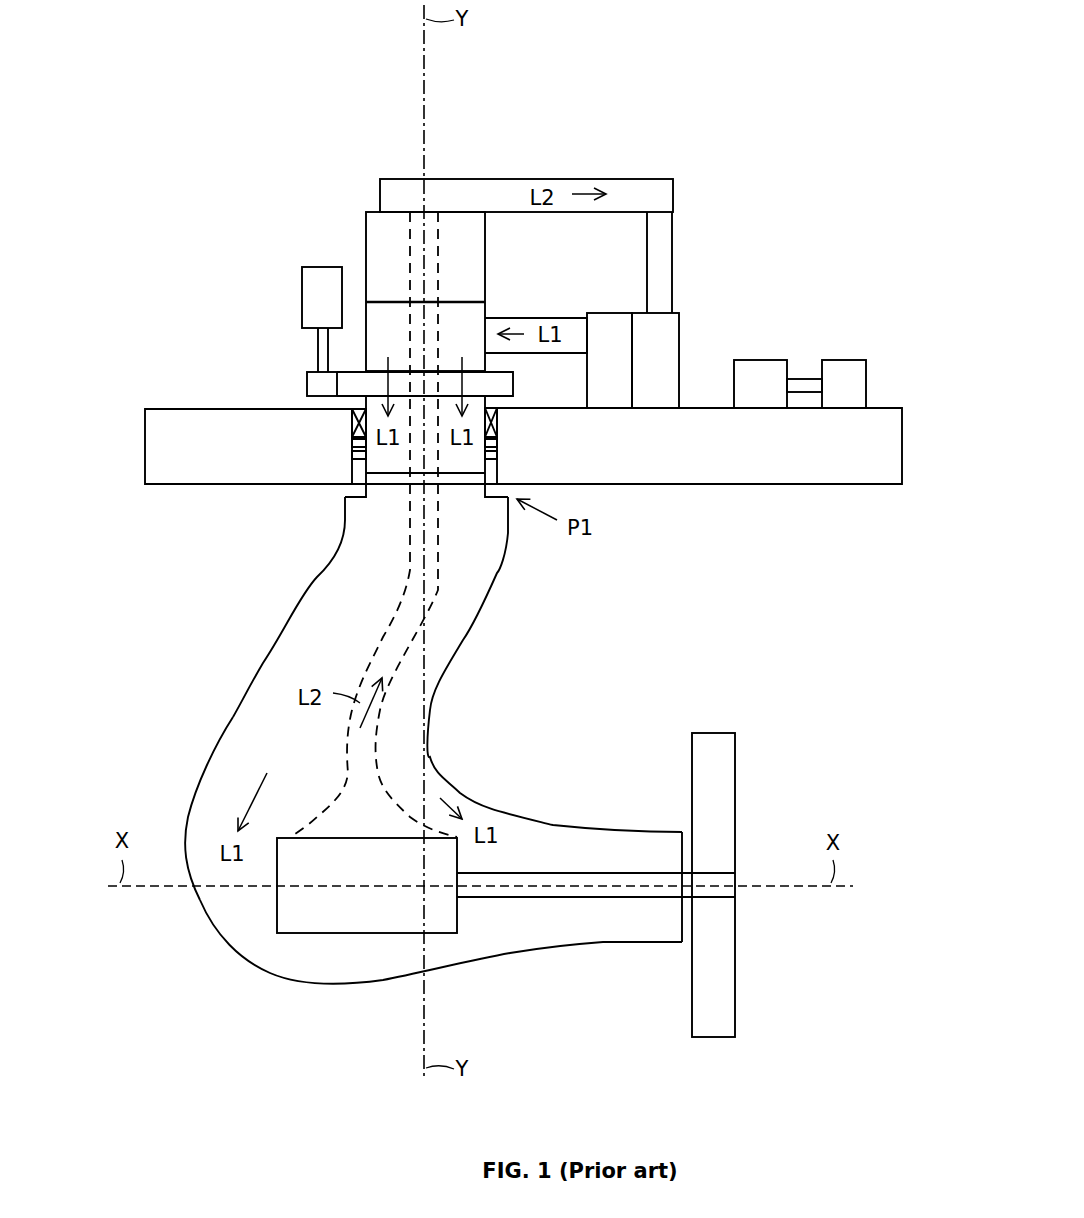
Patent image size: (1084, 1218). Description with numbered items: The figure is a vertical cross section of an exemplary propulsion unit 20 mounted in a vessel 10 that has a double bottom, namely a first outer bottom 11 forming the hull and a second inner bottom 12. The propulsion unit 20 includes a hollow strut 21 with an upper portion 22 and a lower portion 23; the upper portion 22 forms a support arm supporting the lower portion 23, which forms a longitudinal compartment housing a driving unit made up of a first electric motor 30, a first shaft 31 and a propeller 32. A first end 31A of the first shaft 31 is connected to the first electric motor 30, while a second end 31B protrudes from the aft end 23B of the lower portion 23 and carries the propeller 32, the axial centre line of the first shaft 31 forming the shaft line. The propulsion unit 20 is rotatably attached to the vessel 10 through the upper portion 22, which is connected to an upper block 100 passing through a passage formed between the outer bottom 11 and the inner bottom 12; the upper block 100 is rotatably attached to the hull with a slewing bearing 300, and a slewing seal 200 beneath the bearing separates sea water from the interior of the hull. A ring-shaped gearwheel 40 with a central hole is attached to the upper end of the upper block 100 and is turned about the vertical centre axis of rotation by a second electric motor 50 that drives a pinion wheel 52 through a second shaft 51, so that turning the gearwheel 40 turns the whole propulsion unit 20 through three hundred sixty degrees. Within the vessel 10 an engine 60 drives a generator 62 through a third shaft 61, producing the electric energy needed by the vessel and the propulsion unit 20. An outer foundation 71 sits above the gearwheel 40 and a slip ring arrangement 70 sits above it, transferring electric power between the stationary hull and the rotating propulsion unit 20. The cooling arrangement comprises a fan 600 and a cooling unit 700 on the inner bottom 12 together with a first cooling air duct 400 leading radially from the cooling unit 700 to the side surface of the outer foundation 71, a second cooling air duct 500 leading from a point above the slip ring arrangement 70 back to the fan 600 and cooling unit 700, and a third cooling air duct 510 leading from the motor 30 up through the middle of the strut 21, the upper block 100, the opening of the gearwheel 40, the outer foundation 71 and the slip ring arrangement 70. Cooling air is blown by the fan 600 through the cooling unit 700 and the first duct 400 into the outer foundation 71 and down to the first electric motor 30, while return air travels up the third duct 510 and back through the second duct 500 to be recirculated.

The vessel 10 is at (709, 70).
The first outer bottom 11 is at (851, 486).
The second inner bottom 12 is at (888, 406).
The propulsion unit 20 is at (408, 766).
The hollow strut 21 is at (210, 755).
The upper portion 22 is at (343, 539).
The lower portion 23 is at (384, 968).
The aft end 23B is at (644, 931).
The first electric motor 30 is at (312, 875).
The first shaft 31 is at (573, 880).
The first end 31A is at (481, 901).
The second end 31B is at (732, 890).
The propeller 32 is at (722, 742).
The gearwheel 40 is at (513, 387).
The second electric motor 50 is at (320, 292).
The second shaft 51 is at (322, 347).
The pinion wheel 52 is at (320, 383).
The engine 60 is at (848, 366).
The third shaft 61 is at (802, 385).
The generator 62 is at (756, 366).
The slip ring arrangement 70 is at (372, 227).
The outer foundation 71 is at (478, 317).
The upper block 100 is at (467, 475).
The slewing seal 200 is at (498, 453).
The slewing bearing 300 is at (498, 423).
The first cooling air duct 400 is at (568, 333).
The second cooling air duct 500 is at (483, 188).
The third cooling air duct 510 is at (395, 643).
The fan 600 is at (663, 397).
The cooling unit 700 is at (605, 402).